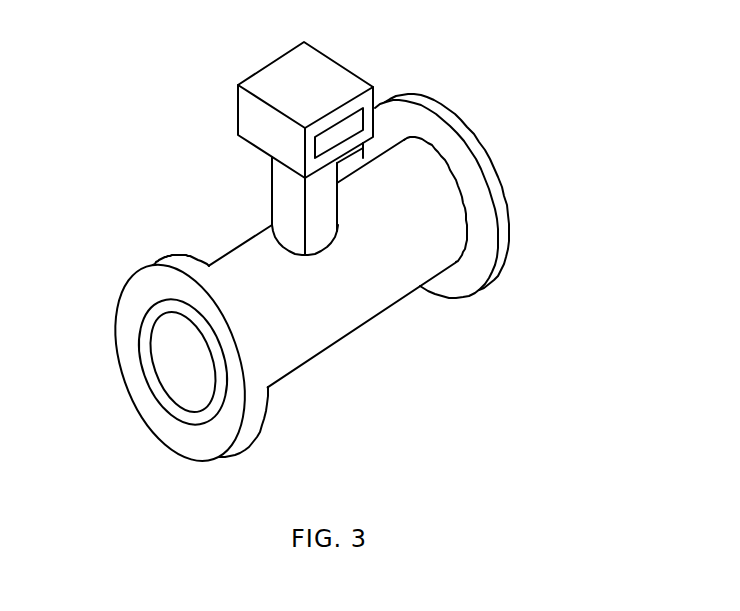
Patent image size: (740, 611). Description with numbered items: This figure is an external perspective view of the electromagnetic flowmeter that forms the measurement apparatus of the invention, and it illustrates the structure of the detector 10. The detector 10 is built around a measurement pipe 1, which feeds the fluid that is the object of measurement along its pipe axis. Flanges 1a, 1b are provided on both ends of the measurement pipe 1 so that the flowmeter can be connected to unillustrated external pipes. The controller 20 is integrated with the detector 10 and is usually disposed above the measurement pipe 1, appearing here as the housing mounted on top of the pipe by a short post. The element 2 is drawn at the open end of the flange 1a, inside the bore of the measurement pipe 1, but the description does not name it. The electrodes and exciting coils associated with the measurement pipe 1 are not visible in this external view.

The detector 10 is at (322, 260).
The measurement pipe 1 is at (373, 265).
The flange 1a is at (268, 419).
The flange 1b is at (504, 256).
The lining 2 is at (146, 349).
The controller 20 is at (238, 108).